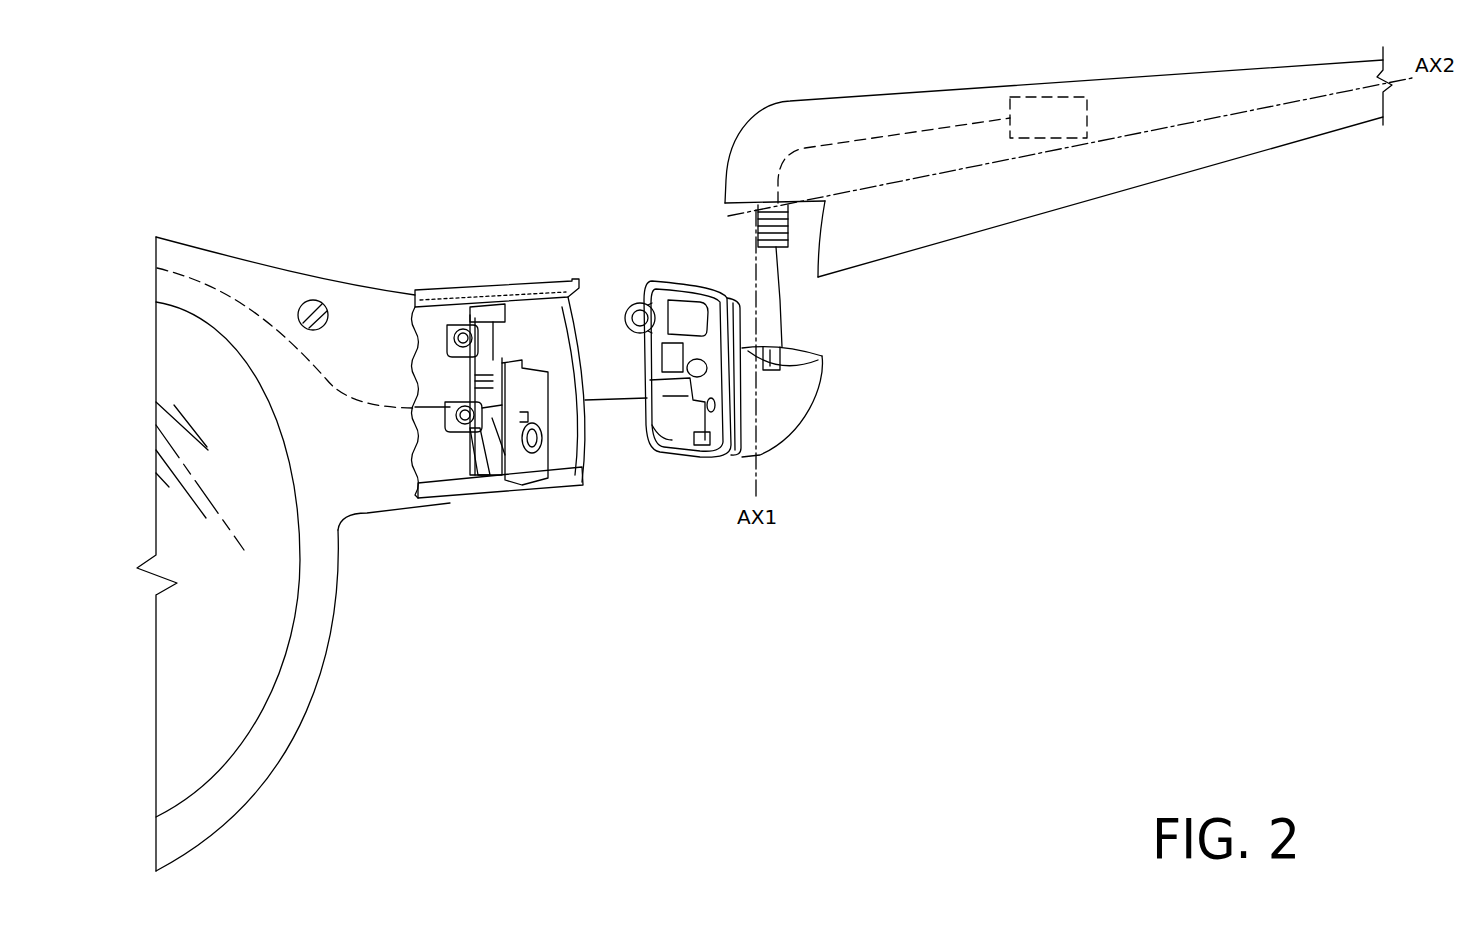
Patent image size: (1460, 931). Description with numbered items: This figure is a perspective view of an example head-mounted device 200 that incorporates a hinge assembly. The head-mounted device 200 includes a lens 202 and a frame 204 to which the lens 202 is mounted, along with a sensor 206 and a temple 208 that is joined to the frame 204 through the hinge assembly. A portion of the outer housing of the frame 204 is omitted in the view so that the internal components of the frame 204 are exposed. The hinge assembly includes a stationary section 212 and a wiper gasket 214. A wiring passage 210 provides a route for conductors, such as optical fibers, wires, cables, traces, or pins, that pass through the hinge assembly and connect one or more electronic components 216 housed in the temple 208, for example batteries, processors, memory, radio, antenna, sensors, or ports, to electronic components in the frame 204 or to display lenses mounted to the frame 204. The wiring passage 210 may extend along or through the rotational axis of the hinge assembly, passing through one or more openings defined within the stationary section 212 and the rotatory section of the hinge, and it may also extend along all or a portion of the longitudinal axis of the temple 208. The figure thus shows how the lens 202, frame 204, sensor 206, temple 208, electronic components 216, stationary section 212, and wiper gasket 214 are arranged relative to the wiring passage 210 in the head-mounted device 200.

The head-mounted device 200 is at (206, 67).
The lens 202 is at (180, 705).
The frame 204 is at (400, 298).
The sensor 206 is at (313, 300).
The temple 208 is at (780, 130).
The wiring passage 210 is at (210, 276).
The stationary section 212 is at (788, 418).
The wiper gasket 214 is at (670, 279).
The electronic components 216 is at (1027, 96).